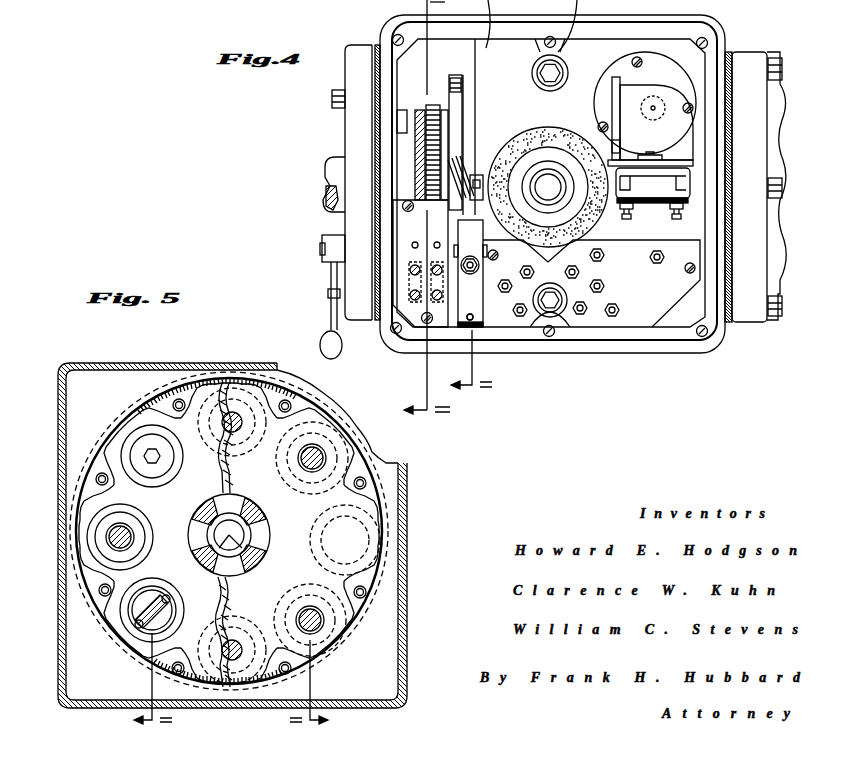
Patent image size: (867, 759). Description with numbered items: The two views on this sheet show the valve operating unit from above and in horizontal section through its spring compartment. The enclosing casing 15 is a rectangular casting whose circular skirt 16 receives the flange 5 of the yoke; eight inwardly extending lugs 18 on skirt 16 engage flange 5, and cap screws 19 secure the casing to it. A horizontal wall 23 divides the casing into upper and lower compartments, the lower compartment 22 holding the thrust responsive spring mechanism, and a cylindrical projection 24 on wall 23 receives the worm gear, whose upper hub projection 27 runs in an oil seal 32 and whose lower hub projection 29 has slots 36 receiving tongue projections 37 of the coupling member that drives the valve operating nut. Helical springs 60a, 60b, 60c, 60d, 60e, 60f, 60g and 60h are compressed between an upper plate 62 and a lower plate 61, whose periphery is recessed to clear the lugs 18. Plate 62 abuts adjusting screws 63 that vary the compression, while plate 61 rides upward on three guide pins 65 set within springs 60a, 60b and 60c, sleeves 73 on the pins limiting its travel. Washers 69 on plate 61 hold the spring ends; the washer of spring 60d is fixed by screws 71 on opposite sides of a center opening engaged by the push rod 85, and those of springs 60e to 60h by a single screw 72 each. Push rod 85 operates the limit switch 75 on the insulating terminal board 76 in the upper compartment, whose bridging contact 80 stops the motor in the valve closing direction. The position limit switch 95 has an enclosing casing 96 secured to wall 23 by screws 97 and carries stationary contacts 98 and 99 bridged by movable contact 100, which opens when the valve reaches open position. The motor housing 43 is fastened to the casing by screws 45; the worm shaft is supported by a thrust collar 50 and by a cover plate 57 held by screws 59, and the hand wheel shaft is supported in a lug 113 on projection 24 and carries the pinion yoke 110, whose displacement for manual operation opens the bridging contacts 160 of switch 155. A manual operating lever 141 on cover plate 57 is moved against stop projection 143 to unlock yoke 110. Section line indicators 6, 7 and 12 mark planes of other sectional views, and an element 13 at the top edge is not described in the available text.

In FIG. 4, the housing cover 13 is at (448, 7).
In FIG. 4, the cover plate 57 is at (357, 50).
In FIG. 4, the screws 59 is at (332, 98).
In FIG. 4, the stop projection 143 is at (328, 296).
In FIG. 4, the manual operating lever 141 is at (323, 340).
In FIG. 4, the section line 12 is at (437, 211).
In FIG. 4, the section line 6 is at (478, 363).
In FIG. 4, the yoke 110 is at (440, 140).
In FIG. 4, the thrust collar 50 is at (462, 78).
In FIG. 4, the lug 113 is at (483, 170).
In FIG. 4, the horizontal wall 23 is at (548, 163).
In FIG. 4, the cylindrical projection 24 is at (531, 128).
In FIG. 4, the upwardly extending tubular hub projection 27 is at (549, 150).
In FIG. 4, the oil seal 32 is at (573, 140).
In FIG. 4, the screws 97 is at (643, 61).
In FIG. 4, the enclosing casing 96 is at (650, 121).
In FIG. 4, the position limit switch 95 is at (652, 170).
In FIG. 4, the movable bridging contact 100 is at (652, 205).
In FIG. 4, the stationary contact 98 is at (625, 219).
In FIG. 4, the stationary contact 99 is at (678, 219).
In FIG. 4, the insulating terminal board 76 is at (591, 283).
In FIG. 4, the adjusting screws 63 is at (557, 310).
In FIG. 5, the adjusting screws 63 is at (240, 642).
In FIG. 4, the switch 155 is at (420, 263).
In FIG. 4, the bridging contacts 160 is at (435, 268).
In FIG. 4, the limit switch 75 is at (470, 273).
In FIG. 4, the bridging contact 80 is at (483, 317).
In FIG. 4, the motor housing 43 is at (778, 132).
In FIG. 4, the screws 45 is at (779, 60).
In FIG. 5, the enclosing casing 15 is at (100, 363).
In FIG. 5, the lower compartment 22 is at (400, 625).
In FIG. 5, the circular skirt 16 is at (375, 452).
In FIG. 5, the flange 5 is at (203, 377).
In FIG. 5, the plate 61 is at (150, 392).
In FIG. 5, the helical spring 60a is at (79, 535).
In FIG. 5, the helical spring 60b is at (348, 630).
In FIG. 5, the helical spring 60c is at (332, 425).
In FIG. 5, the helical spring 60d is at (118, 636).
In FIG. 5, the helical spring 60e is at (118, 433).
In FIG. 5, the helical spring 60f is at (232, 383).
In FIG. 5, the helical spring 60g is at (380, 540).
In FIG. 5, the helical spring 60h is at (222, 626).
In FIG. 5, the lugs 18 is at (96, 480).
In FIG. 5, the cap screws 19 is at (98, 590).
In FIG. 5, the washers 69 is at (165, 605).
In FIG. 5, the screw 72 is at (150, 452).
In FIG. 5, the screws 71 is at (160, 594).
In FIG. 5, the push rod 85 is at (135, 617).
In FIG. 5, the sleeves 73 is at (105, 545).
In FIG. 5, the guide pins 65 is at (298, 612).
In FIG. 5, the plate 62 is at (255, 380).
In FIG. 5, the downwardly extending tubular hub projection 29 is at (262, 513).
In FIG. 5, the slots 36 is at (264, 524).
In FIG. 5, the tongue projections 37 is at (252, 540).
In FIG. 5, the section line 7 is at (231, 682).